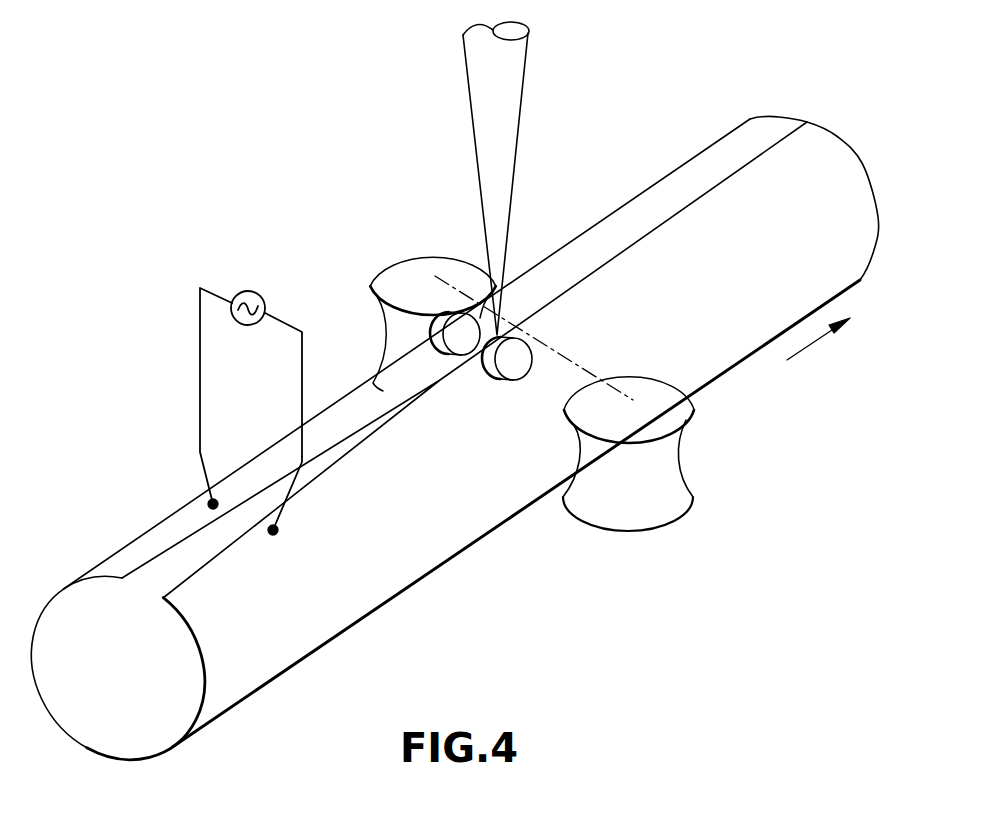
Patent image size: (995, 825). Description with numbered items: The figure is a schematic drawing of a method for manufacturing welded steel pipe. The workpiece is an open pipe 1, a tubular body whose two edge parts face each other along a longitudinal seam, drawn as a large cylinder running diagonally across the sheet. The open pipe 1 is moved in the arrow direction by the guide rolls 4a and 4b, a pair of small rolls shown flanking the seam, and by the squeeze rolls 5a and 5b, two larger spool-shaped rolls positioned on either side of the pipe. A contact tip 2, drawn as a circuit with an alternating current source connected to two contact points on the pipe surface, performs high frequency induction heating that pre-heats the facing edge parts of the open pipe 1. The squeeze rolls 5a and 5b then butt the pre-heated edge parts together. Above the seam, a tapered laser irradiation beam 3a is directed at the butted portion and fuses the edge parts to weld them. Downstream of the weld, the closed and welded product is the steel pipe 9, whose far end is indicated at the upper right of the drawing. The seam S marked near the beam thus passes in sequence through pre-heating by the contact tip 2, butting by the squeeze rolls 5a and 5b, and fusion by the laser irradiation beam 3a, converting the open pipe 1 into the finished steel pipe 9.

The open pipe 1 is at (265, 682).
The contact tip 2 is at (213, 362).
The laser irradiation beam 3a is at (527, 65).
The guide roll 4a is at (460, 340).
The guide roll 4b is at (512, 375).
The squeeze roll 5a is at (442, 252).
The squeeze roll 5b is at (677, 407).
The steel pipe 9 is at (865, 235).
The strip S is at (503, 335).